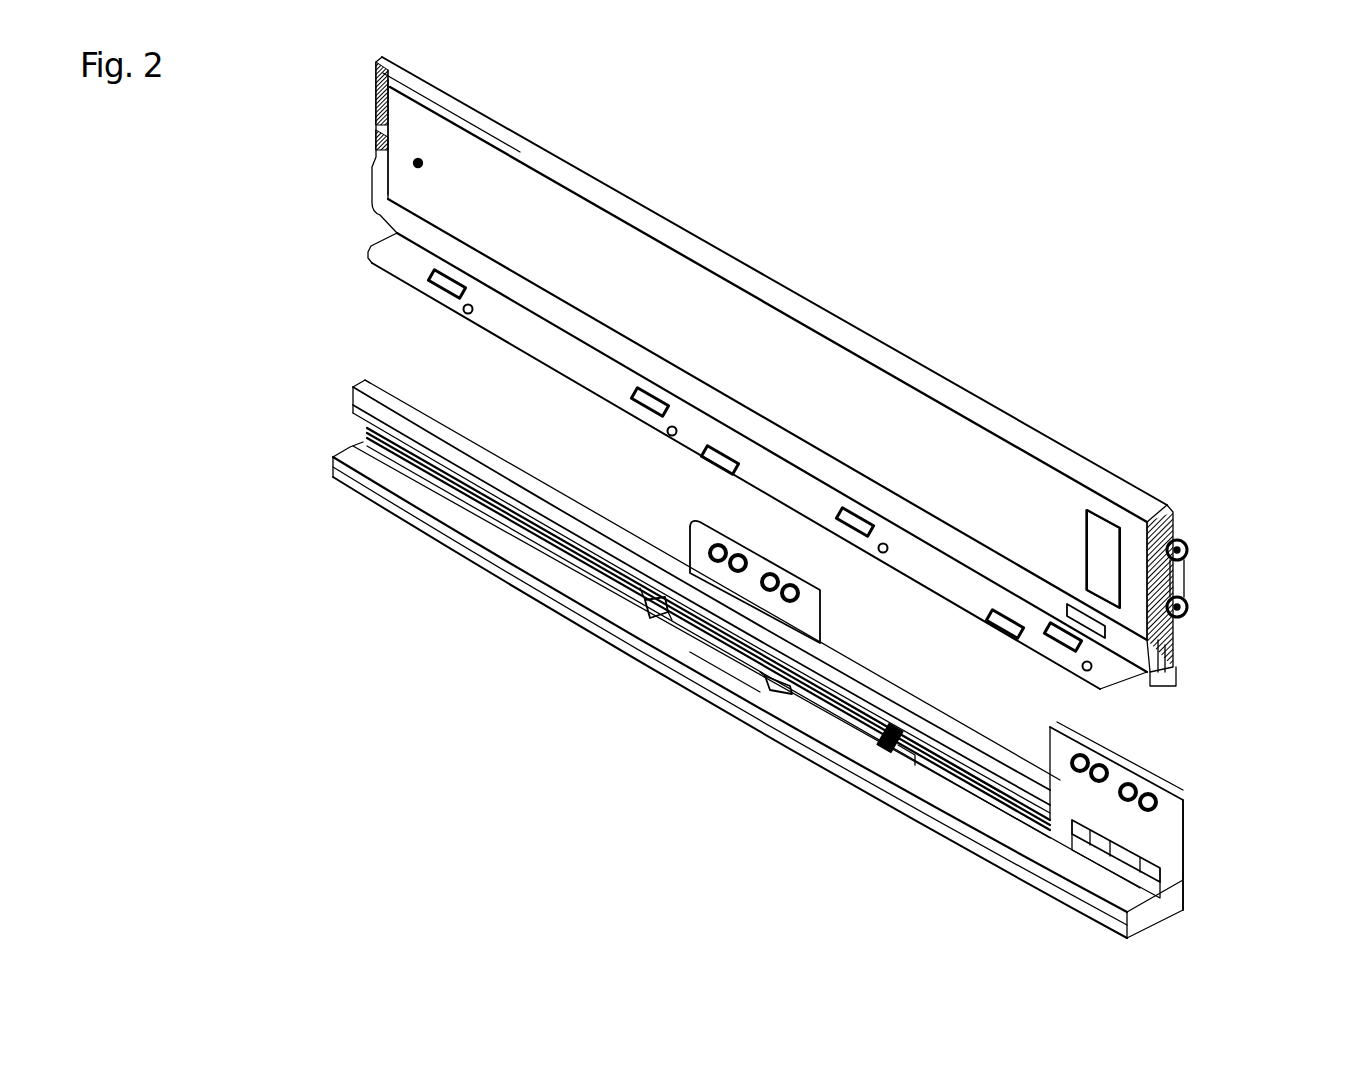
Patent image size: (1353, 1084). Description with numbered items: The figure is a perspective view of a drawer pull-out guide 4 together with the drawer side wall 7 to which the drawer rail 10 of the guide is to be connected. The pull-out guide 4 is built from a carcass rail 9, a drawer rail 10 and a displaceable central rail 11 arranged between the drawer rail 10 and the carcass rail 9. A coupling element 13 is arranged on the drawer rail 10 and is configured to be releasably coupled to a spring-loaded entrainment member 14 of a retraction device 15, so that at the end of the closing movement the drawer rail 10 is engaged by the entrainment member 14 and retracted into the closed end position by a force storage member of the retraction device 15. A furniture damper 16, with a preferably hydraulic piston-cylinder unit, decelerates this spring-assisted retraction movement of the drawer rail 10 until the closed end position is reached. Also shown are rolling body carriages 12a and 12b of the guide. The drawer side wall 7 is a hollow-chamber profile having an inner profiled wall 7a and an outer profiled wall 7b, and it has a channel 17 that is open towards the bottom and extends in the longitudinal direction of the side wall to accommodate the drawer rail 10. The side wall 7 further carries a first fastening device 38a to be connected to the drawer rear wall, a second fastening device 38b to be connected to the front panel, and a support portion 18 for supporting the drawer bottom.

The drawer pull-out guide 4 is at (378, 531).
The drawer side wall 7 is at (870, 319).
The inner profiled wall 7a is at (413, 196).
The outer profiled wall 7b is at (1008, 416).
The carcass rail 9 is at (520, 580).
The drawer rail 10 is at (895, 700).
The central rail 11 is at (1105, 880).
The first rolling body carriage 12a is at (690, 530).
The second rolling body carriage 12b is at (1183, 820).
The coupling element 13 is at (650, 607).
The entrainment member 14 is at (770, 688).
The retraction device 15 is at (709, 660).
The furniture damper 16 is at (960, 775).
The channel 17 is at (1157, 670).
The support portion 18 is at (405, 271).
The first fastening device 38a is at (361, 138).
The second fastening device 38b is at (1194, 579).